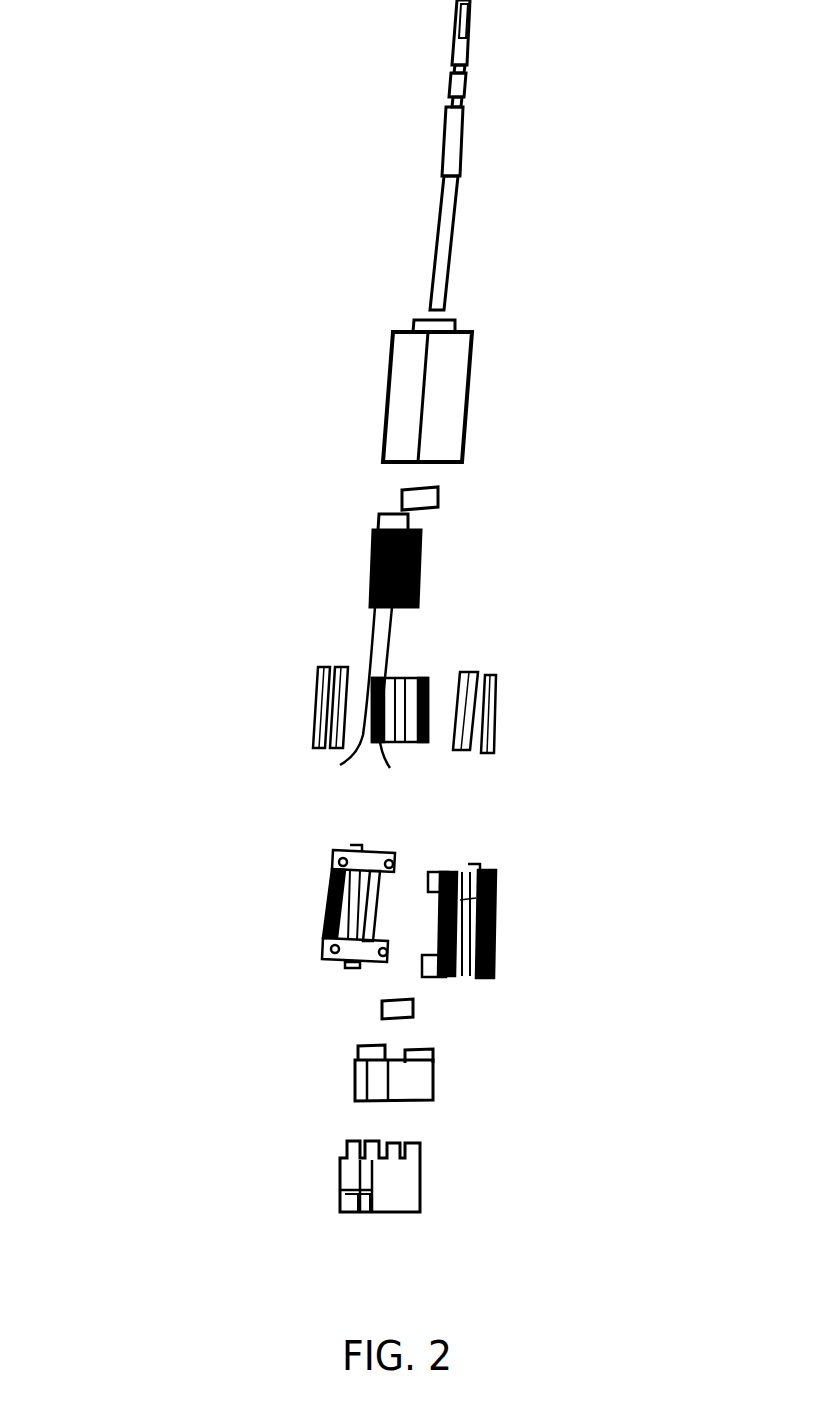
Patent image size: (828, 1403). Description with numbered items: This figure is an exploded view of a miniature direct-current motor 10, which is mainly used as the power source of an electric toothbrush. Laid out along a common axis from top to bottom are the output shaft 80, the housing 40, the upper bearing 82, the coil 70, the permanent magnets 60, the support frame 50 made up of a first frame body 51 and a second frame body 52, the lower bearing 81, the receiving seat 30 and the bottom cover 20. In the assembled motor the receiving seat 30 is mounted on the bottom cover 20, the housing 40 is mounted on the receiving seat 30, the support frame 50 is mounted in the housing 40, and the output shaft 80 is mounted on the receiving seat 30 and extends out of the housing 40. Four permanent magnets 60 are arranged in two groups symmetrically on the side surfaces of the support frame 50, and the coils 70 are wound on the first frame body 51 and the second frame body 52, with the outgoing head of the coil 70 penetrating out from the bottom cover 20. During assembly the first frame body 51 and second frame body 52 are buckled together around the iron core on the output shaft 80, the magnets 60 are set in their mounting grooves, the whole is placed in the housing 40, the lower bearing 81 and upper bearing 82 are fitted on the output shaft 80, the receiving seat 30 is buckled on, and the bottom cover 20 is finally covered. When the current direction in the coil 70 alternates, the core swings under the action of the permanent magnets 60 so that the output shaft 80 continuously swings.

The miniature direct-current motor 10 is at (106, 56).
The bottom cover 20 is at (400, 1178).
The receiving seat 30 is at (418, 1082).
The housing 40 is at (450, 400).
The support frame 50 is at (625, 862).
The first frame body 51 is at (395, 862).
The second frame body 52 is at (495, 905).
The permanent magnet 60 is at (320, 718).
The coil 70 is at (420, 575).
The output shaft 80 is at (448, 223).
The lower bearing 81 is at (410, 1010).
The upper bearing 82 is at (432, 498).